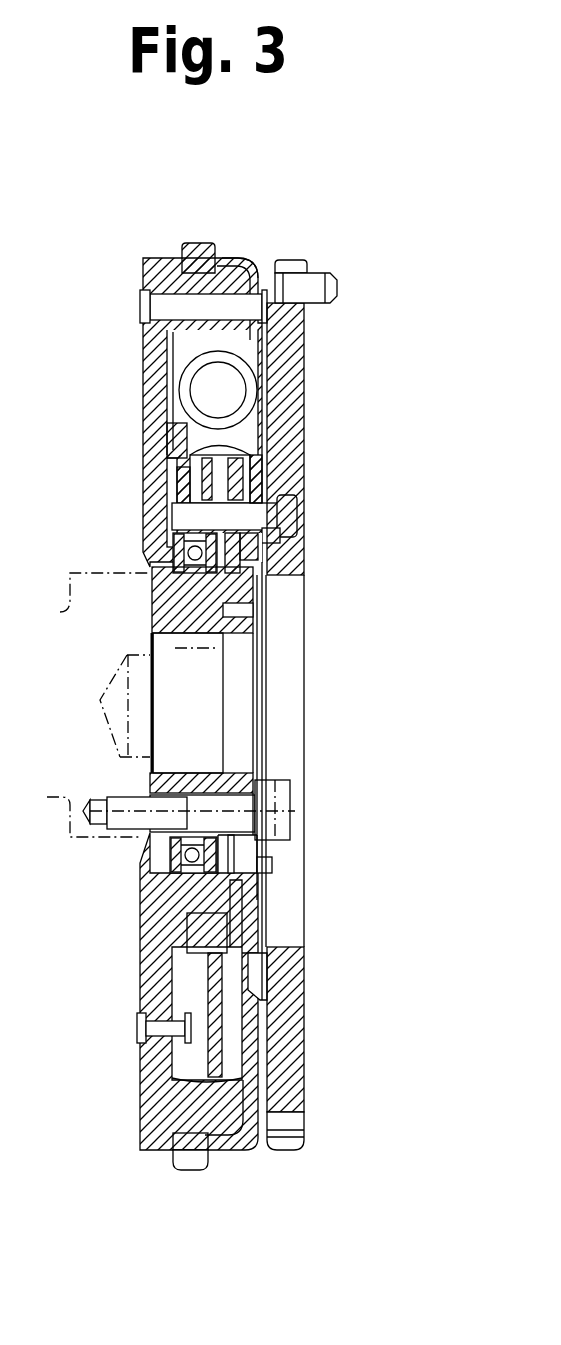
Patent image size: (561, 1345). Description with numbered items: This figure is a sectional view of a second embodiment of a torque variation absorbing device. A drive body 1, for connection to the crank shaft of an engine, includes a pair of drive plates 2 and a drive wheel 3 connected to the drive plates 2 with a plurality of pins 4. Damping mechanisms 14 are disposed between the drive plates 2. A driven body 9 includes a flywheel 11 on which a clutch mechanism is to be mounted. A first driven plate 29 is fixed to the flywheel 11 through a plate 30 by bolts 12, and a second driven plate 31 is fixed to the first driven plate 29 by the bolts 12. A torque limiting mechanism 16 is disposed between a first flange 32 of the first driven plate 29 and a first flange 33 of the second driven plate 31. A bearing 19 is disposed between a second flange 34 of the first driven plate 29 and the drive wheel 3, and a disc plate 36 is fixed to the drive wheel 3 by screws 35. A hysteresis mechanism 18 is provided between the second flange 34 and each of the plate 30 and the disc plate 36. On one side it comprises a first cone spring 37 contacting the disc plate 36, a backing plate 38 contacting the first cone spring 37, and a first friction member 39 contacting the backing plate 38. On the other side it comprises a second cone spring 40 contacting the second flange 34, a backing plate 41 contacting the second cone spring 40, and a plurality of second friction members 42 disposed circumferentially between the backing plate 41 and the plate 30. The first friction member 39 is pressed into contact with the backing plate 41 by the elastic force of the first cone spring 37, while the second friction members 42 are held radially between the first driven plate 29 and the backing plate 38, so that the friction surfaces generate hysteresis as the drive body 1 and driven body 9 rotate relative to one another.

The drive body 1 is at (257, 666).
The drive plates 2 is at (176, 338).
The drive wheel 3 is at (169, 272).
The pins 4 is at (158, 307).
The driven body 9 is at (347, 253).
The flywheel 11 is at (293, 347).
The bolts 12 is at (270, 490).
The damping mechanisms 14 is at (140, 393).
The torque limiting mechanism 16 is at (140, 463).
The hysteresis mechanism 18 is at (290, 570).
The bearing 19 is at (150, 588).
The first driven plate 29 is at (262, 475).
The plate 30 is at (265, 548).
The second driven plate 31 is at (173, 500).
The first flange of the first driven plate 32 is at (255, 455).
The first flange of the second driven plate 33 is at (177, 483).
The second flange of the first driven plate 34 is at (152, 622).
The screws 35 is at (262, 612).
The disc plate 36 is at (262, 630).
The first cone spring 37 is at (262, 575).
The backing plate 38 is at (262, 582).
The first friction member 39 is at (262, 565).
The second cone spring 40 is at (297, 515).
The backing plate 41 is at (292, 537).
The second friction members 42 is at (262, 558).